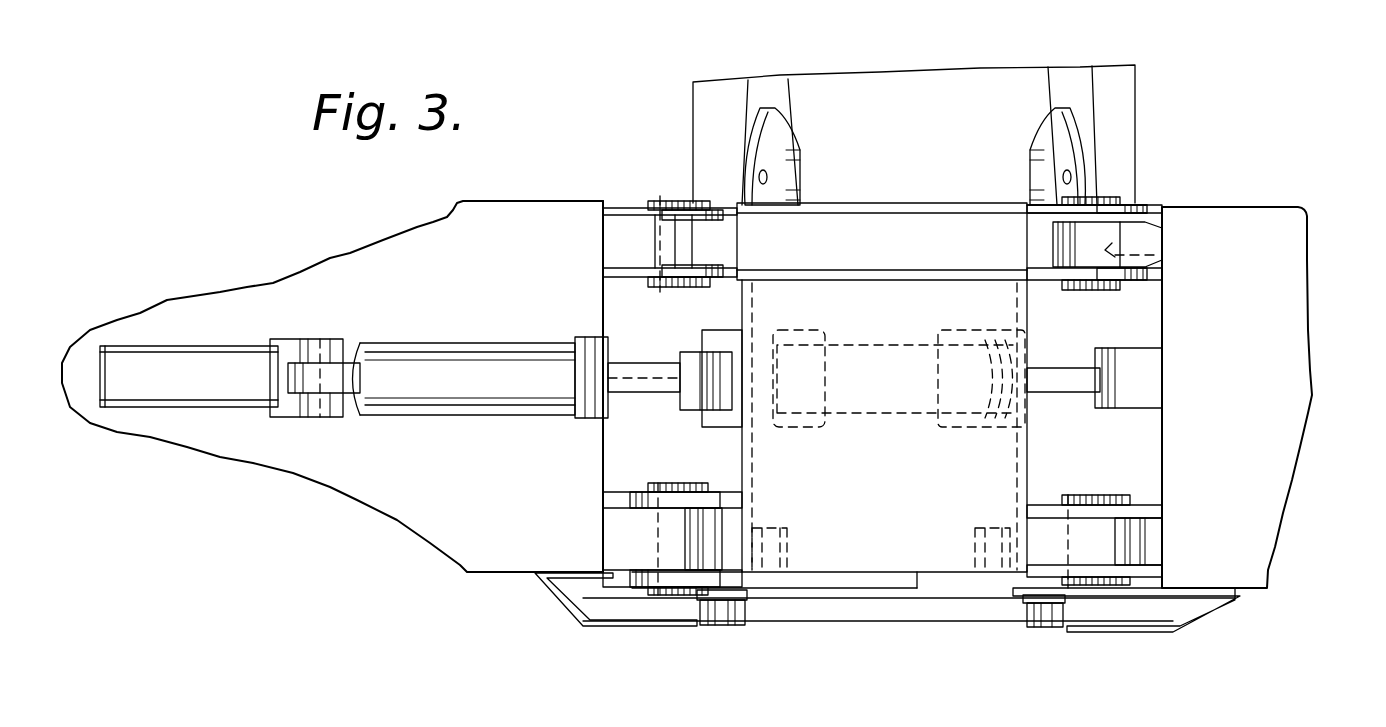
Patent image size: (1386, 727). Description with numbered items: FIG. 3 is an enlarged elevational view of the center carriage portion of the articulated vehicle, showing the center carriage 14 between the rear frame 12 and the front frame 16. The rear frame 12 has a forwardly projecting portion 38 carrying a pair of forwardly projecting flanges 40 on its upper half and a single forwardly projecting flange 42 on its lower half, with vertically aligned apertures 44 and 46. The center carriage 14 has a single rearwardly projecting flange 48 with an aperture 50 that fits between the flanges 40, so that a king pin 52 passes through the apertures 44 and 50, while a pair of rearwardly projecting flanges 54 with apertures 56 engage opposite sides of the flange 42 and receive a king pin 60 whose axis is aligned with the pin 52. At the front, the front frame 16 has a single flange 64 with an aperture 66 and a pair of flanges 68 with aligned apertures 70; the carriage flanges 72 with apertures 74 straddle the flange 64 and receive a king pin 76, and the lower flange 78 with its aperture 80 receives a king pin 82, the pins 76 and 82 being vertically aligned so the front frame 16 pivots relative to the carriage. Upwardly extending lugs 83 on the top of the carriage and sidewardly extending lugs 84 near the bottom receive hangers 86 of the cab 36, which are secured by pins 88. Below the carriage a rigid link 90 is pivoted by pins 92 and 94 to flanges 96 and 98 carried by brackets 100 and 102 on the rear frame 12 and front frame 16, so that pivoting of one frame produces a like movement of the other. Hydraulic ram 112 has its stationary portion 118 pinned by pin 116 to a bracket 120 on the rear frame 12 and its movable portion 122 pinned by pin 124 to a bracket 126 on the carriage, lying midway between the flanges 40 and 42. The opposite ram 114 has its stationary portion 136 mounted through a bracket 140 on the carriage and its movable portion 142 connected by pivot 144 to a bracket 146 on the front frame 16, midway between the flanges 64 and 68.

The rear frame 12 is at (473, 224).
The center carriage 14 is at (925, 560).
The front frame 16 is at (1290, 368).
The cab 36 is at (902, 95).
The forwardly projecting portion 38 is at (575, 216).
The pair of forwardly projecting flanges 40 is at (605, 232).
The single forwardly projecting flange 42 is at (603, 549).
The apertures 44 is at (658, 232).
The aperture 46 is at (620, 530).
The single rearwardly projecting flange 48 is at (755, 243).
The aperture 50 is at (702, 240).
The pivot pin or king pin 52 is at (672, 283).
The pair of rearwardly projecting flanges 54 is at (722, 505).
The apertures 56 is at (680, 488).
The pivot pin or king pin 60 is at (664, 490).
The rearwardly projecting single flange 64 is at (1150, 245).
The aperture 66 is at (1160, 256).
The pair of rearwardly extending flanges 68 is at (1145, 565).
The apertures 70 is at (1105, 512).
The pair of forwardly projecting flanges 72 is at (1045, 225).
The apertures 74 is at (1135, 201).
The pivot pin or king pin 76 is at (1098, 292).
The forwardly extending flange 78 is at (1045, 540).
The aperture 80 is at (1095, 594).
The pivot pin or king pin 82 is at (1085, 500).
The upwardly extending parallel lugs 83 is at (795, 180).
The sidewardly extending parallel lugs 84 is at (772, 532).
The hangers 86 is at (762, 136).
The pins 88 is at (758, 177).
The rigid link 90 is at (830, 612).
The pivot pin 92 is at (715, 615).
The pivot pin 94 is at (1043, 618).
The pair of spaced apart flanges 96 is at (705, 598).
The pair of spaced apart flanges 98 is at (1022, 604).
The bracket 100 is at (578, 596).
The bracket 102 is at (1185, 612).
The hydraulic ram 112 is at (445, 416).
The hydraulic ram 114 is at (915, 408).
The pin 116 is at (322, 345).
The stationary portion 118 is at (430, 352).
The bracket 120 is at (176, 398).
The movable portion 122 is at (634, 386).
The pin 124 is at (690, 360).
The bracket 126 is at (725, 330).
The stationary portion 136 is at (882, 356).
The bracket 140 is at (805, 342).
The movable portion 142 is at (1062, 396).
The pivot 144 is at (1128, 366).
The bracket 146 is at (1165, 358).